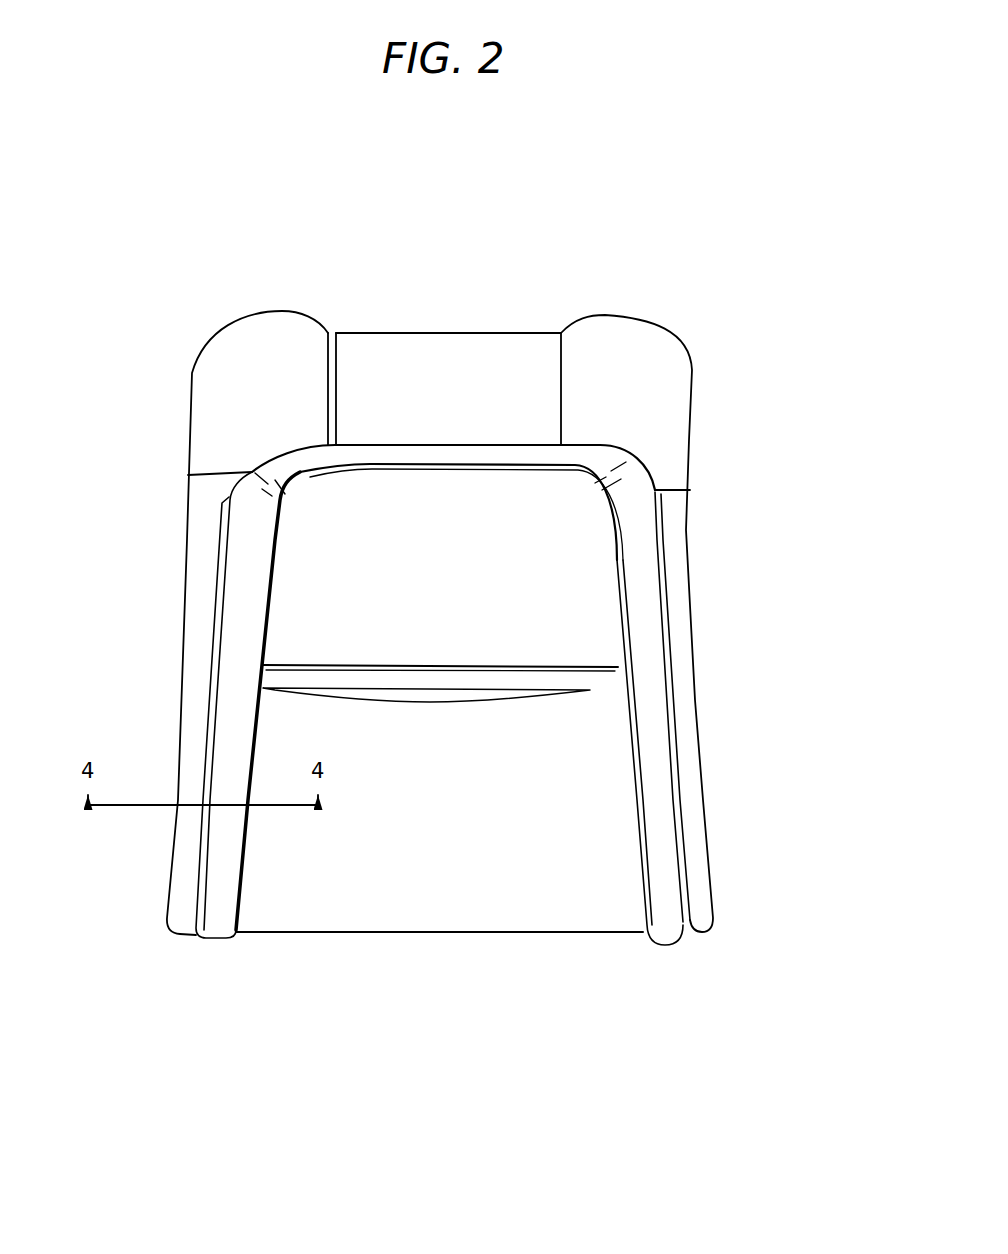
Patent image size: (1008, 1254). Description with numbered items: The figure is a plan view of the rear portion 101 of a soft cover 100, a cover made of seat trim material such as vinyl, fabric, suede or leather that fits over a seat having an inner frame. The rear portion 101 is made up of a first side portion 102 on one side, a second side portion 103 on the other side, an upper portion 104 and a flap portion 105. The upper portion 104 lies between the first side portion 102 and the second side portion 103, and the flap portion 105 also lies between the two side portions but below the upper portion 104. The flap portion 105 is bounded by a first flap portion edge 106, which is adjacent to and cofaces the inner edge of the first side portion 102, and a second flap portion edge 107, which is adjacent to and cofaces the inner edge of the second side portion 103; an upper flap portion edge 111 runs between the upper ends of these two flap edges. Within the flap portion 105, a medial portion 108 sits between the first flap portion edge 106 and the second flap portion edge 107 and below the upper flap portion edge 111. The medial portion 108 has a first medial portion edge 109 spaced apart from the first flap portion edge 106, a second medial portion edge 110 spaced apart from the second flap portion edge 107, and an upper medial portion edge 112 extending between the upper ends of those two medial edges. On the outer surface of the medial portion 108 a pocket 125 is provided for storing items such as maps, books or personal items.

The soft cover 100 is at (340, 262).
The rear portion 101 is at (497, 330).
The first side portion 102 is at (200, 602).
The second side portion 103 is at (667, 595).
The upper portion 104 is at (507, 380).
The flap portion 105 is at (520, 583).
The first flap portion edge 106 is at (212, 663).
The second flap portion edge 107 is at (668, 685).
The medial portion 108 is at (418, 822).
The first medial portion edge 109 is at (248, 747).
The second medial portion edge 110 is at (640, 752).
The upper flap portion edge 111 is at (370, 443).
The upper medial portion edge 112 is at (496, 465).
The pocket 125 is at (483, 682).